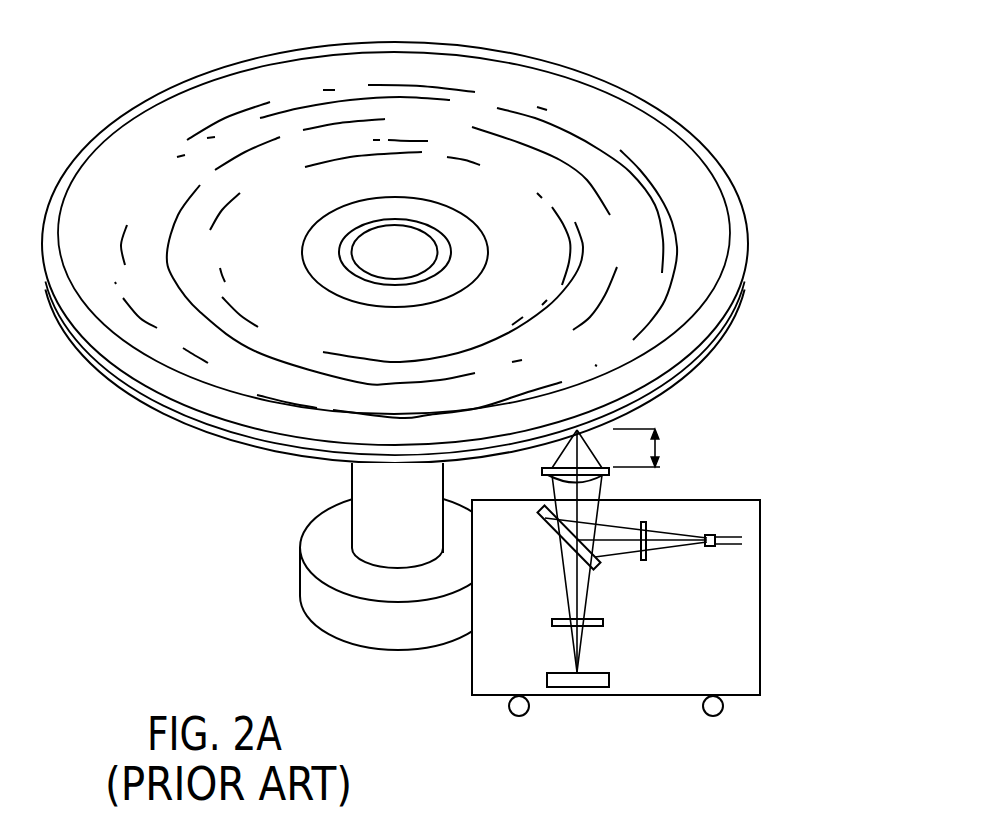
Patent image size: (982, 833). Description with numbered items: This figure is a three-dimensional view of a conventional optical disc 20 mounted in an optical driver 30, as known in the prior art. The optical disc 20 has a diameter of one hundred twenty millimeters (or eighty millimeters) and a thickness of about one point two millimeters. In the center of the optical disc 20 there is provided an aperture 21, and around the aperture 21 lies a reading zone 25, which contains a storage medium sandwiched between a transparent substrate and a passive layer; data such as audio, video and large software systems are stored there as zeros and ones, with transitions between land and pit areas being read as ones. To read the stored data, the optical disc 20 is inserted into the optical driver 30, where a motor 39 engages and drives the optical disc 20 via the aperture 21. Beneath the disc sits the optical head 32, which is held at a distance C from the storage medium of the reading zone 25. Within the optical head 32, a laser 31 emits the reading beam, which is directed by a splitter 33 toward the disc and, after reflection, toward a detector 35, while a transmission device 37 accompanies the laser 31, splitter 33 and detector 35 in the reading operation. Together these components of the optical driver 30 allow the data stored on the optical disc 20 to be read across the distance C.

The optical disc 20 is at (118, 96).
The aperture 21 is at (400, 247).
The reading zone 25 is at (617, 128).
The optical driver 30 is at (783, 535).
The laser 31 is at (723, 535).
The optical head 32 is at (747, 590).
The splitter 33 is at (565, 538).
The detector 35 is at (578, 680).
The transmission device 37 is at (713, 716).
The motor 39 is at (300, 575).
The distance C is at (648, 448).